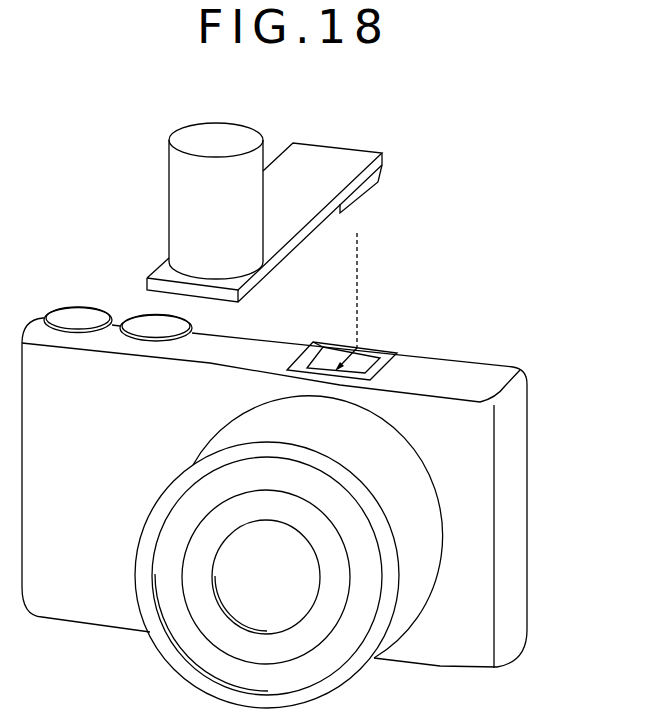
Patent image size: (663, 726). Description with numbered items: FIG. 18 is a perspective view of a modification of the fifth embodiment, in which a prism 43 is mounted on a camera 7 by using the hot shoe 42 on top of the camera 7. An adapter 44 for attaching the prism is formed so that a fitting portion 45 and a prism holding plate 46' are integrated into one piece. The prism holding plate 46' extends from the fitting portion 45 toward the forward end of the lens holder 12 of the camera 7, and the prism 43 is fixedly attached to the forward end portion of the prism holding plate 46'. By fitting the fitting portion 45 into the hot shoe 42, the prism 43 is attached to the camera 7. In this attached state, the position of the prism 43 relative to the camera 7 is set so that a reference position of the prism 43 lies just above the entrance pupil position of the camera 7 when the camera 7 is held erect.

The camera 7 is at (477, 360).
The lens holder 12 is at (172, 657).
The hot shoe 42 is at (390, 355).
The prism 43 is at (205, 122).
The adapter 44 is at (301, 187).
The fitting portion 45 is at (362, 203).
The prism holding plate 46' is at (264, 191).